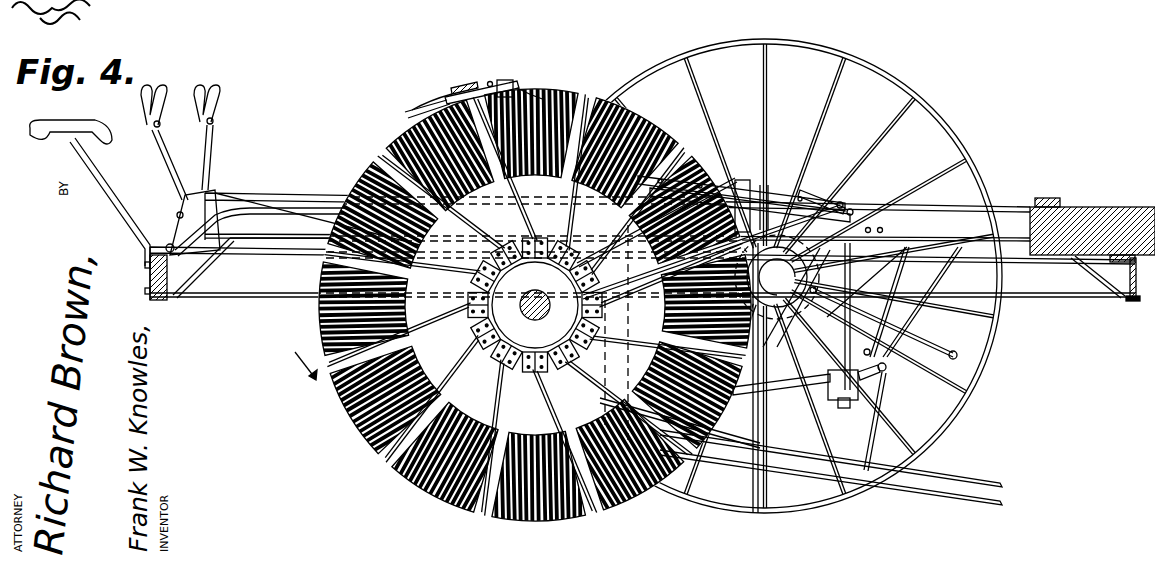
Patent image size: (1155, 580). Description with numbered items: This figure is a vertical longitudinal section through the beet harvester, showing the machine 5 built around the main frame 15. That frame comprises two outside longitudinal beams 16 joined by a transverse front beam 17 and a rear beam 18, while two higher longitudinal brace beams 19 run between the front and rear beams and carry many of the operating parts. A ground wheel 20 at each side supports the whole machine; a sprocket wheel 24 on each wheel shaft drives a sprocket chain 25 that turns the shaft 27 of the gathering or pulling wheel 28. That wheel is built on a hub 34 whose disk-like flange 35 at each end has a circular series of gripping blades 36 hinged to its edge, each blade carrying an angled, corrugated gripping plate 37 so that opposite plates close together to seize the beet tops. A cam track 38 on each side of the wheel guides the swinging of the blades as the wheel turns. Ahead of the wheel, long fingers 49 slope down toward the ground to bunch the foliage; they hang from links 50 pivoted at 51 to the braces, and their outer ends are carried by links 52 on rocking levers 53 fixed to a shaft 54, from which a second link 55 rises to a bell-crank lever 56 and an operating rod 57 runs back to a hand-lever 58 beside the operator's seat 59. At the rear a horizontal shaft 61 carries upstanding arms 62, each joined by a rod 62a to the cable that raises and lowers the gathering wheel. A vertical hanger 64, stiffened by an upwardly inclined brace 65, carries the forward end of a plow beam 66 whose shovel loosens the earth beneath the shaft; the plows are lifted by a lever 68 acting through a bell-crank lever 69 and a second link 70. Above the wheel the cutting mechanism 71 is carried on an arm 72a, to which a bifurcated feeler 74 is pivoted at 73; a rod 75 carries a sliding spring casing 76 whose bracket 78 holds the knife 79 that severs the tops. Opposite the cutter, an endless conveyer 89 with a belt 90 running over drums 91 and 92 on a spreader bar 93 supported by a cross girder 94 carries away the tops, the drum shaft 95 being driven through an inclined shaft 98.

The direction of rotation 5 is at (768, 245).
The main frame 15 is at (647, 312).
The outside longitudinal beam 16 is at (642, 273).
The front beam 17 is at (1132, 302).
The rear beam 18 is at (150, 276).
The longitudinal brace beam 19 is at (295, 210).
The ground wheel 20 is at (890, 90).
The sprocket wheel 24 is at (785, 331).
The sprocket chain 25 is at (812, 329).
The shaft 27 is at (546, 315).
The gathering or pulling wheel 28 is at (573, 109).
The hub 34 is at (534, 293).
The disk-like flange 35 is at (495, 330).
The gripping blade 36 is at (534, 304).
The gripping plate 37 is at (410, 151).
The cam track 38 is at (388, 171).
The finger 49 is at (975, 487).
The link 50 is at (760, 413).
The pivot 51 is at (777, 277).
The link 52 is at (880, 401).
The rocking lever 53 is at (887, 371).
The shaft 54 is at (868, 381).
The second link 55 is at (872, 300).
The bell-crank lever 56 is at (750, 193).
The operating rod 57 is at (280, 200).
The hand-lever 58 is at (167, 177).
The operator's seat 59 is at (88, 124).
The horizontal shaft 61 is at (185, 300).
The upstanding arm 62 is at (205, 258).
The rod 62a is at (280, 259).
The vertical hanger 64 is at (836, 401).
The upwardly inclined brace 65 is at (912, 328).
The plow beam 66 is at (745, 441).
The lever 68 is at (207, 158).
The bell-crank lever 69 is at (610, 241).
The second link 70 is at (632, 361).
The cutting mechanism 71 is at (492, 89).
The arm 72a is at (539, 87).
The pivot 73 is at (512, 83).
The bifurcated finger or feeler 74 is at (426, 101).
The rod 75 is at (430, 125).
The spring casing 76 is at (440, 99).
The bracket 78 is at (488, 82).
The knife 79 is at (463, 88).
The endless conveyer 89 is at (698, 176).
The belt 90 is at (818, 192).
The drum 91 is at (656, 131).
The drum 92 is at (853, 210).
The spreader bar 93 is at (740, 180).
The cross girder 94 is at (766, 184).
The shaft 95 is at (872, 228).
The longitudinal downwardly inclined shaft 98 is at (841, 200).